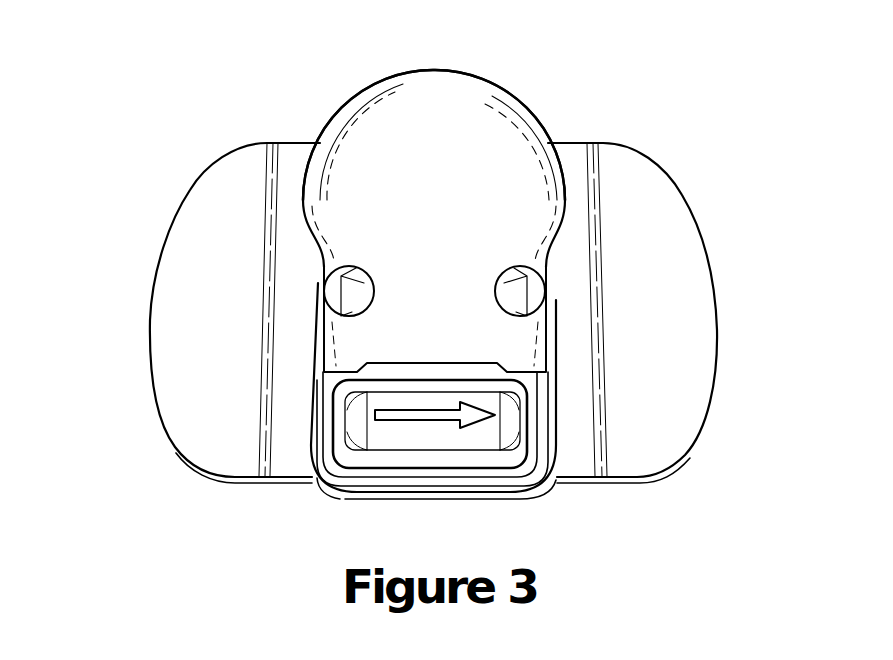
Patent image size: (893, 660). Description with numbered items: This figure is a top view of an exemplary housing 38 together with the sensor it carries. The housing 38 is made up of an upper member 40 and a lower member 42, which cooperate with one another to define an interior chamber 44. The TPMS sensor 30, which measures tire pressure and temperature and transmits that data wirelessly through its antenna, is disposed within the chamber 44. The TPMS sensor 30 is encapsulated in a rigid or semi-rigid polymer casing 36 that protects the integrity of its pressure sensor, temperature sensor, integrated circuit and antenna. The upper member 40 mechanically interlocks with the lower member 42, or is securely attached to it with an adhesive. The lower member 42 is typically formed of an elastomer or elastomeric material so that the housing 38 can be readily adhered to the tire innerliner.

The TPMS sensor 30 is at (342, 286).
The polymer casing 36 is at (352, 308).
The housing 38 is at (524, 111).
The upper member 40 is at (371, 87).
The lower member 42 is at (195, 187).
The interior chamber 44 is at (528, 290).